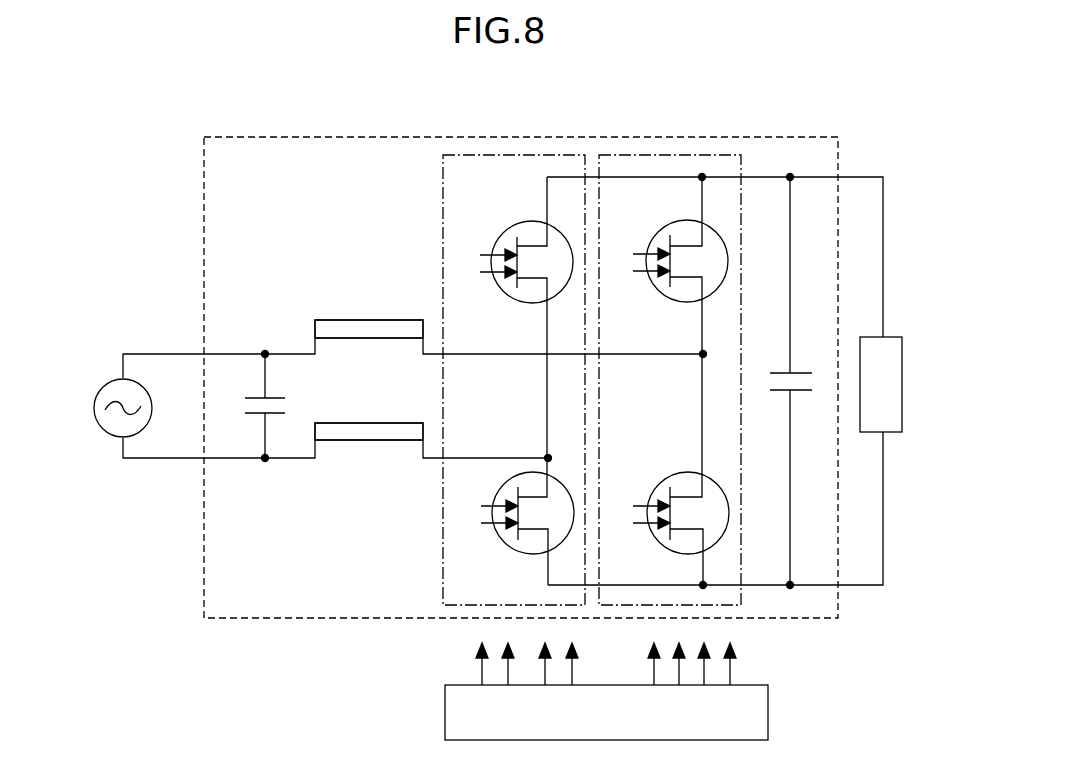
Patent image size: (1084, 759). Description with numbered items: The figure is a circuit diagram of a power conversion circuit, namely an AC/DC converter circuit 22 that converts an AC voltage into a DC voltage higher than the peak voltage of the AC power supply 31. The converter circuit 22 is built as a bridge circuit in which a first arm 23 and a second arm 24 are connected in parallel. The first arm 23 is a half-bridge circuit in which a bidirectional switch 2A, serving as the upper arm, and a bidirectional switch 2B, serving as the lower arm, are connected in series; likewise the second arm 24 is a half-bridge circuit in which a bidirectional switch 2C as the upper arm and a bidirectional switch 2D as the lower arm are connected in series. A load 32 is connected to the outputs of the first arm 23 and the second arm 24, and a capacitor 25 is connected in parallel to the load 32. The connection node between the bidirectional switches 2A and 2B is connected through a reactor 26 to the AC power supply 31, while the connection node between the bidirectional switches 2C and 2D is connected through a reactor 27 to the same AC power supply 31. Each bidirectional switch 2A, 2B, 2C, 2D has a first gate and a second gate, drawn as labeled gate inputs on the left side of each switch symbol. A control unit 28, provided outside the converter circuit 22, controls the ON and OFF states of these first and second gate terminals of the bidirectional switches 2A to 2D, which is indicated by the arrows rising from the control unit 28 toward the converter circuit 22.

The converter circuit 22 is at (786, 137).
The first arm 23 is at (530, 155).
The second arm 24 is at (692, 155).
The capacitor 25 is at (797, 373).
The reactor 26 is at (362, 320).
The reactor 27 is at (362, 423).
The control unit 28 is at (606, 691).
The AC power supply 31 is at (112, 380).
The load 32 is at (893, 337).
The bidirectional switch 2A is at (512, 225).
The bidirectional switch 2B is at (518, 477).
The bidirectional switch 2C is at (666, 228).
The bidirectional switch 2D is at (672, 478).